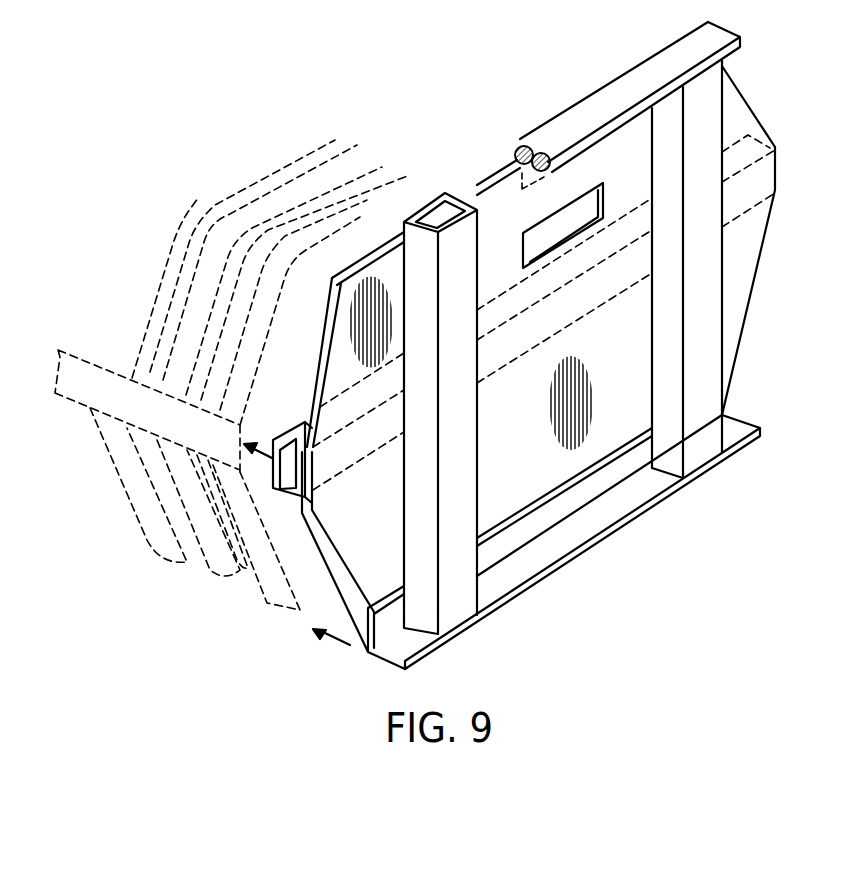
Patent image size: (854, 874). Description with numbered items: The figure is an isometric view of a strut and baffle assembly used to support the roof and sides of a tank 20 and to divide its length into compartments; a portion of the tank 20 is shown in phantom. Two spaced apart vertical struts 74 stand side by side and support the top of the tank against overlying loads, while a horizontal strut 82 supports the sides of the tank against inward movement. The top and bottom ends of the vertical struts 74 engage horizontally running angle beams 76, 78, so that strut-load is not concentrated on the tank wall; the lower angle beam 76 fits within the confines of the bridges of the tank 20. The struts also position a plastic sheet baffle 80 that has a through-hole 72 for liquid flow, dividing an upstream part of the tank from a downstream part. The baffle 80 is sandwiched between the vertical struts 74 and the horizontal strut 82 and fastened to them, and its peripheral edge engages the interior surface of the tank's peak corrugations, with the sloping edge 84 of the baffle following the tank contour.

The tank 20 is at (200, 562).
The through-hole 72 is at (538, 223).
The vertical struts 74 is at (700, 452).
The angle beam 76 is at (598, 528).
The angle beam 78 is at (632, 82).
The plastic sheet baffle 80 is at (750, 280).
The horizontal strut 82 is at (296, 440).
The angled edge 84 is at (757, 111).